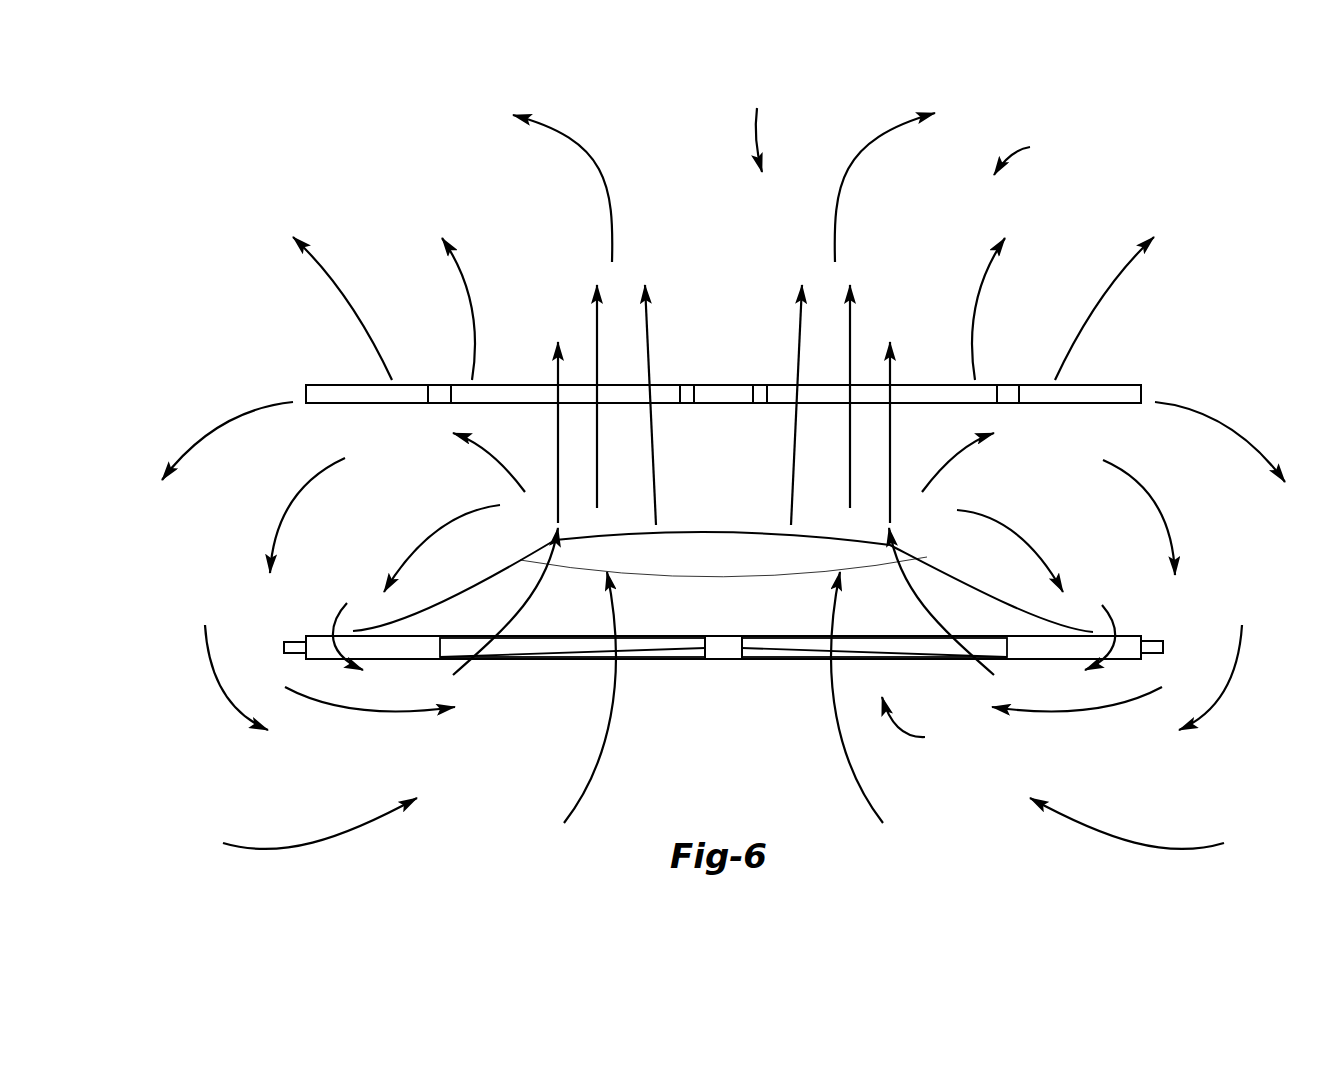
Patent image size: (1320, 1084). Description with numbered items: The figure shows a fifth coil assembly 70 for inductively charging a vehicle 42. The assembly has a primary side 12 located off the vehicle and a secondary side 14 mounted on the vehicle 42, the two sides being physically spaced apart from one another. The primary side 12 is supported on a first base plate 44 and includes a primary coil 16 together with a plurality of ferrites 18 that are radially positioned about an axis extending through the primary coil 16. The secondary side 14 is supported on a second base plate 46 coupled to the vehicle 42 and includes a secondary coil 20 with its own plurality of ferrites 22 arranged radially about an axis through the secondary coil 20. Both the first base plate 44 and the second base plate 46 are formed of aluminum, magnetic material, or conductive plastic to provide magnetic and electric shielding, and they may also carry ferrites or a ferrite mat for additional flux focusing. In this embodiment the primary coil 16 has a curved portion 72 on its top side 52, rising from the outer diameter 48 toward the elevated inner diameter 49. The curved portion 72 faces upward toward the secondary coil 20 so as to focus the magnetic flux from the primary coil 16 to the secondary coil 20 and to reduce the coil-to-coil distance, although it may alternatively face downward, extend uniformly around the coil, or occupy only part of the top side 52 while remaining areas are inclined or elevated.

The primary side 12 is at (927, 737).
The secondary side 14 is at (759, 129).
The primary coil 16 is at (1028, 618).
The ferrites 18 is at (440, 650).
The secondary coil 20 is at (306, 403).
The ferrites 22 is at (473, 396).
The vehicle 42 is at (309, 129).
The first base plate 44 is at (648, 660).
The second base plate 46 is at (565, 319).
The outer diameter 48 is at (353, 631).
The inner diameter 49 is at (523, 555).
The top side 52 is at (935, 562).
The fifth coil assembly 70 is at (1030, 147).
The curved portion 72 is at (507, 565).